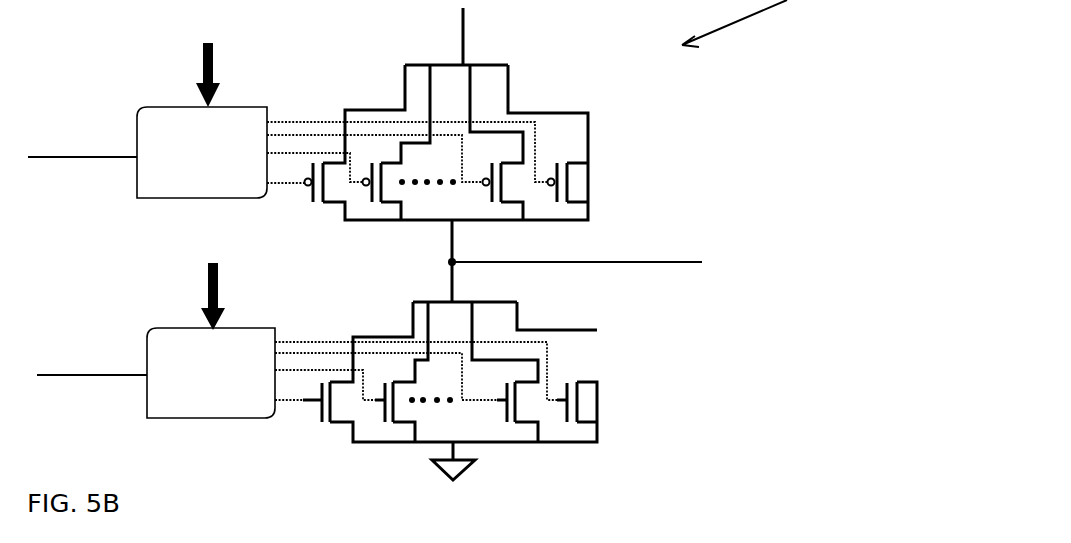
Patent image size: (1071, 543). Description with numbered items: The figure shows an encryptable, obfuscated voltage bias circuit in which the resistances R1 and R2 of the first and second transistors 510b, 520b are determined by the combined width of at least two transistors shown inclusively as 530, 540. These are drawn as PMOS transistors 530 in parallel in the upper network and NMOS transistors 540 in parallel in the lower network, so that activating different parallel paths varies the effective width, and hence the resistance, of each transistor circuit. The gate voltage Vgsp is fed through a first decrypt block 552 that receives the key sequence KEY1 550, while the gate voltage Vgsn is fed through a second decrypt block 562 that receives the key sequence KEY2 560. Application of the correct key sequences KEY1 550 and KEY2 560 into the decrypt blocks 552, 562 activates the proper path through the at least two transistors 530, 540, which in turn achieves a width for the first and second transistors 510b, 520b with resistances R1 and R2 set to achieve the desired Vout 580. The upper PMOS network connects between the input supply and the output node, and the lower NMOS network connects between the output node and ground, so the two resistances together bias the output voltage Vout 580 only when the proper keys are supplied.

The key sequence KEY1 550 is at (180, 32).
The decrypt block 552 is at (145, 120).
The at least two transistors 530 is at (557, 163).
The first transistor 510b is at (632, 185).
The Vout 580 is at (642, 257).
The key sequence KEY2 560 is at (182, 252).
The decrypt block 562 is at (145, 342).
The at least two transistors 540 is at (567, 382).
The second transistor 520b is at (642, 395).